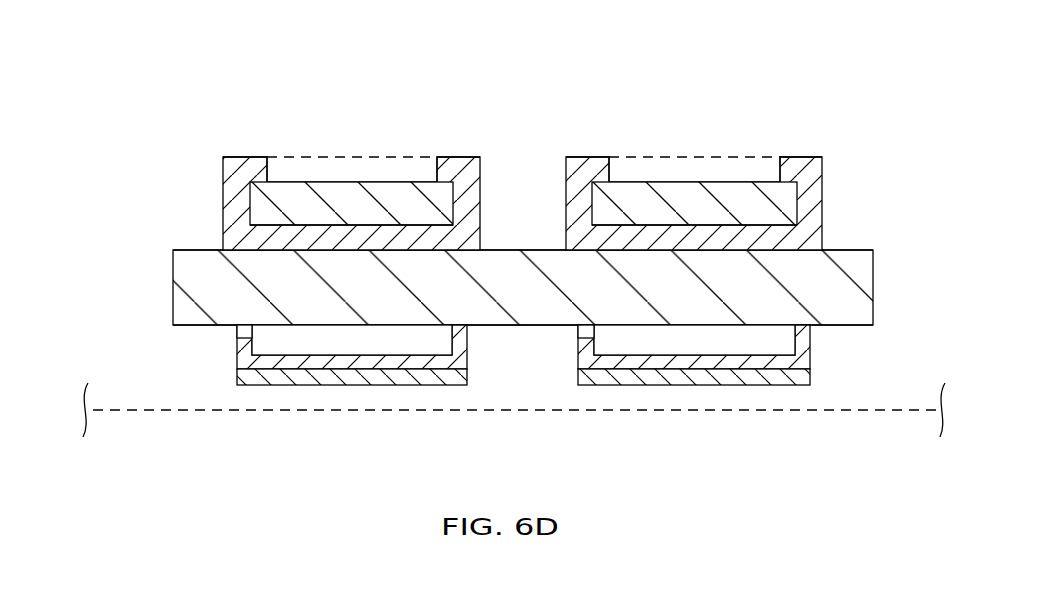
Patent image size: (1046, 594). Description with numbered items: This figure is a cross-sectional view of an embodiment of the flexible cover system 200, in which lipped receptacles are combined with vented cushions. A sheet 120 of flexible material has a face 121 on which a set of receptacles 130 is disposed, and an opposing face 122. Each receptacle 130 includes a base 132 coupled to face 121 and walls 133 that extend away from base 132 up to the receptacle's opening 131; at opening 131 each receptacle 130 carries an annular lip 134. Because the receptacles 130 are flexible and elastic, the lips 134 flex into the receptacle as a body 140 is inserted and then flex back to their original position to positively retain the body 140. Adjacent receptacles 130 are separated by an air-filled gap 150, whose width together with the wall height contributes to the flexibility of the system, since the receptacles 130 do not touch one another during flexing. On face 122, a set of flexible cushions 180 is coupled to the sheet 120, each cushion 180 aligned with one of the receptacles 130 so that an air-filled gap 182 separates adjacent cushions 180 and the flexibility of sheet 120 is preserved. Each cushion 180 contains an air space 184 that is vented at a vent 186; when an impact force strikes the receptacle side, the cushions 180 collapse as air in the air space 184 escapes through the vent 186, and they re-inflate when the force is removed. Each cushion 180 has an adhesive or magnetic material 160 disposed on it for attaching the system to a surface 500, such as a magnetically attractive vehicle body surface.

The flexible cover system 200 is at (108, 106).
The sheet 120 is at (843, 272).
The face 121 is at (836, 250).
The face 122 is at (828, 327).
The receptacle 130 is at (526, 134).
The opening 131 is at (288, 157).
The base 132 is at (295, 222).
The walls 133 is at (232, 197).
The annular lip 134 is at (257, 165).
The body 140 is at (382, 192).
The air-filled gap 150 is at (522, 192).
The adhesive or magnetic material 160 is at (353, 378).
The flexible cushion 180 is at (489, 402).
The air-filled gap 182 is at (522, 363).
The air space 184 is at (275, 343).
The vent 186 is at (240, 333).
The surface 500 is at (122, 410).